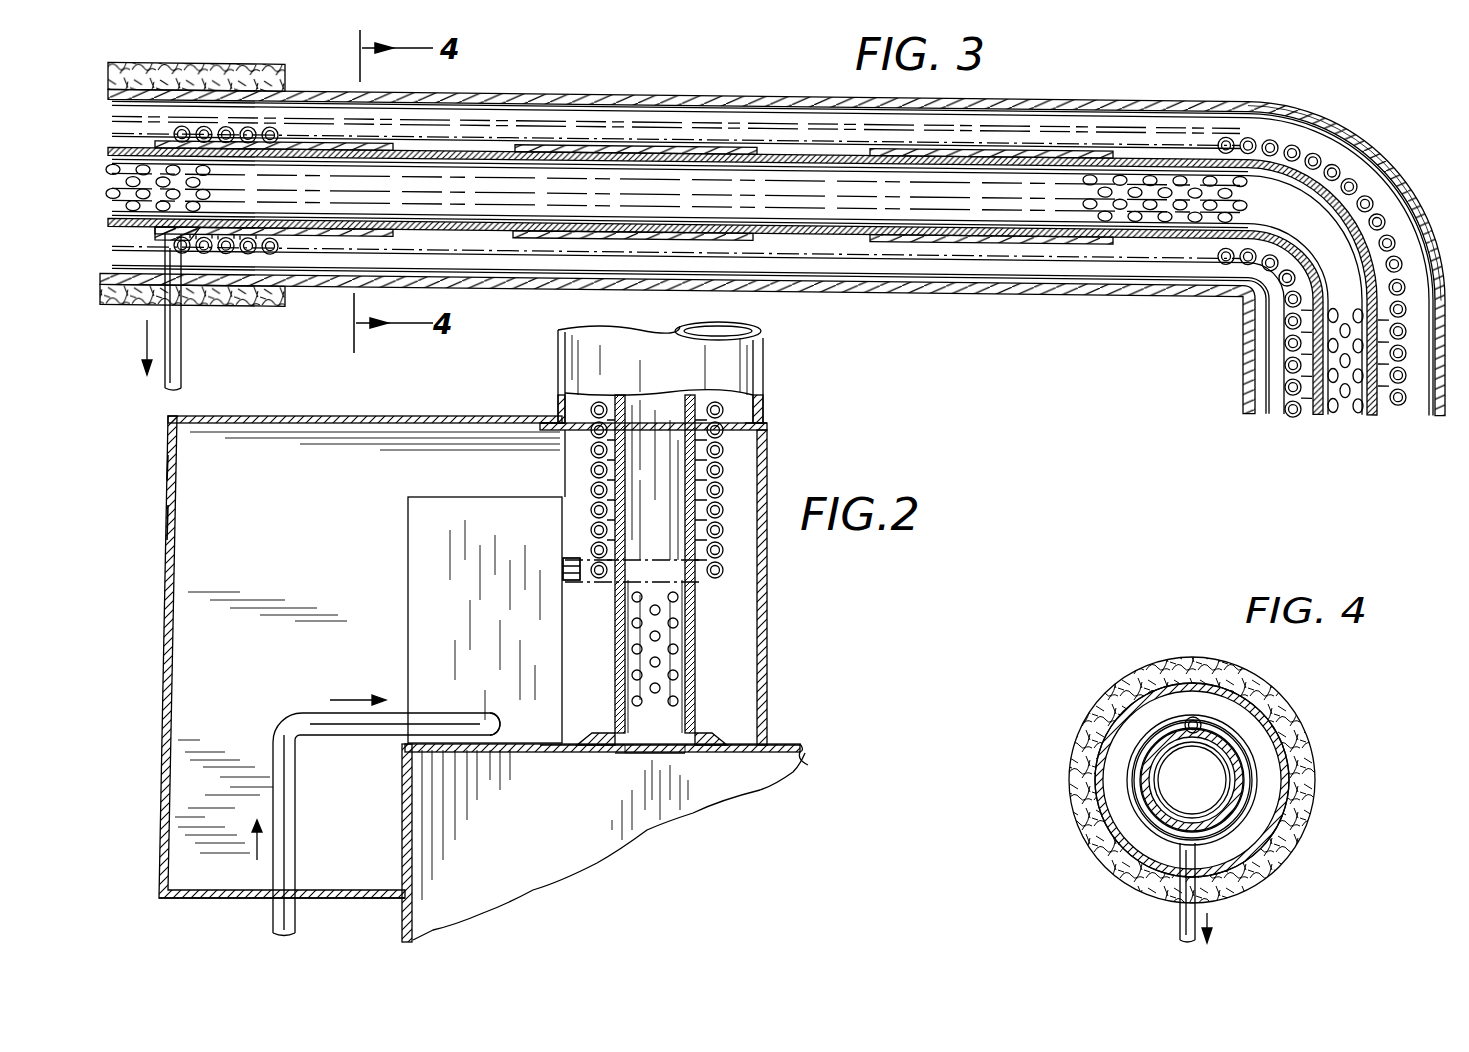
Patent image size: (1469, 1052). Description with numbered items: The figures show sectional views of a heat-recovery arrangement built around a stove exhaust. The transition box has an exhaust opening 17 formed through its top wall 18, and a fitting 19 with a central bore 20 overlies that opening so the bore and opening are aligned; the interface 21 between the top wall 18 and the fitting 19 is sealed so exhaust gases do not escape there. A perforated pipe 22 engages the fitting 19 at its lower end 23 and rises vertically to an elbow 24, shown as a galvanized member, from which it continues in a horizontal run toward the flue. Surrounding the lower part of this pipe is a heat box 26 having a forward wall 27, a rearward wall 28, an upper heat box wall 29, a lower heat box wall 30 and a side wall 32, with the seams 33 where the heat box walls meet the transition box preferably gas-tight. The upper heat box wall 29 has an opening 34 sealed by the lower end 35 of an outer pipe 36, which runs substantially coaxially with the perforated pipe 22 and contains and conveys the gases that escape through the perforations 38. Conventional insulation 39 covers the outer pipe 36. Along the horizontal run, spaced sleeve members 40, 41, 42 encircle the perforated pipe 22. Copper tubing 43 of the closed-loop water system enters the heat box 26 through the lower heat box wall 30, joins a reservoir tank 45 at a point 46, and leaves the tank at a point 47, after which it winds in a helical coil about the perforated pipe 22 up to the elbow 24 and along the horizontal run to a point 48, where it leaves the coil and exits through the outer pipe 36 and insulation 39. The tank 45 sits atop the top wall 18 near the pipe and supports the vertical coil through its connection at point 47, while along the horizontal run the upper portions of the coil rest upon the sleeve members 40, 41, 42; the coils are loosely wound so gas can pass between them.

In FIG. 2, the exhaust opening 17 is at (668, 757).
In FIG. 2, the top wall 18 is at (810, 757).
In FIG. 2, the fitting 19 is at (720, 742).
In FIG. 2, the central bore 20 is at (630, 755).
In FIG. 2, the interface 21 is at (730, 772).
In FIG. 3, the perforated pipe 22 is at (960, 230).
In FIG. 2, the perforated pipe 22 is at (705, 641).
In FIG. 4, the perforated pipe 22 is at (1148, 745).
In FIG. 2, the lower end 23 is at (700, 727).
In FIG. 3, the elbow 24 is at (1365, 191).
In FIG. 2, the heat box 26 is at (158, 590).
In FIG. 2, the forward wall 27 is at (768, 475).
In FIG. 2, the rearward wall 28 is at (173, 521).
In FIG. 2, the upper heat box wall 29 is at (350, 416).
In FIG. 2, the lower heat box wall 30 is at (200, 898).
In FIG. 2, the side wall 32 is at (178, 467).
In FIG. 2, the seams 33 is at (775, 746).
In FIG. 2, the opening 34 is at (560, 430).
In FIG. 2, the lower end 35 is at (760, 424).
In FIG. 3, the outer pipe 36 is at (1026, 91).
In FIG. 2, the outer pipe 36 is at (752, 358).
In FIG. 4, the outer pipe 36 is at (1290, 773).
In FIG. 3, the perforations 38 is at (505, 220).
In FIG. 2, the perforations 38 is at (690, 625).
In FIG. 4, the perforations 38 is at (1216, 792).
In FIG. 3, the insulation 39 is at (250, 307).
In FIG. 4, the insulation 39 is at (1295, 760).
In FIG. 3, the sleeve member 40 is at (1085, 236).
In FIG. 3, the sleeve member 41 is at (668, 143).
In FIG. 3, the sleeve member 42 is at (325, 143).
In FIG. 4, the sleeve member 42 is at (1158, 793).
In FIG. 3, the copper tubing 43 is at (290, 250).
In FIG. 2, the copper tubing 43 is at (722, 520).
In FIG. 4, the copper tubing 43 is at (1235, 823).
In FIG. 2, the reservoir tank 45 is at (417, 553).
In FIG. 2, the point 46 is at (495, 722).
In FIG. 2, the point 47 is at (566, 562).
In FIG. 3, the point 48 is at (165, 234).